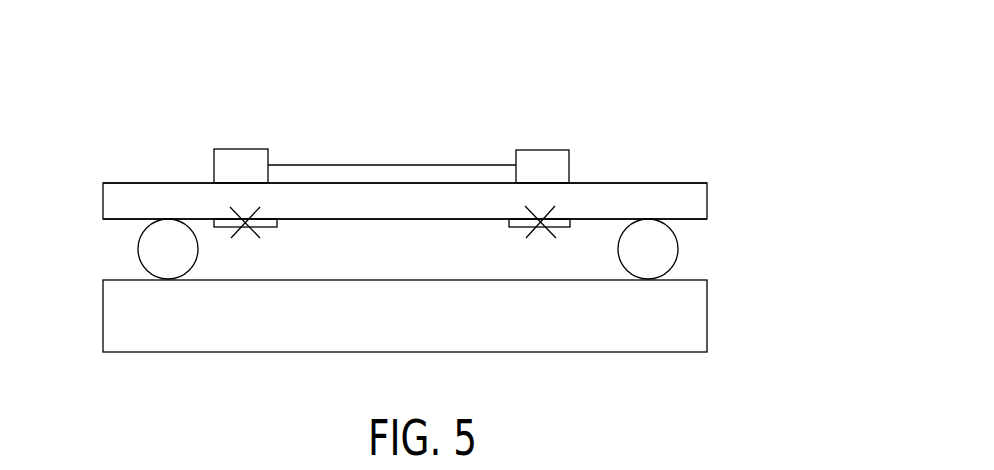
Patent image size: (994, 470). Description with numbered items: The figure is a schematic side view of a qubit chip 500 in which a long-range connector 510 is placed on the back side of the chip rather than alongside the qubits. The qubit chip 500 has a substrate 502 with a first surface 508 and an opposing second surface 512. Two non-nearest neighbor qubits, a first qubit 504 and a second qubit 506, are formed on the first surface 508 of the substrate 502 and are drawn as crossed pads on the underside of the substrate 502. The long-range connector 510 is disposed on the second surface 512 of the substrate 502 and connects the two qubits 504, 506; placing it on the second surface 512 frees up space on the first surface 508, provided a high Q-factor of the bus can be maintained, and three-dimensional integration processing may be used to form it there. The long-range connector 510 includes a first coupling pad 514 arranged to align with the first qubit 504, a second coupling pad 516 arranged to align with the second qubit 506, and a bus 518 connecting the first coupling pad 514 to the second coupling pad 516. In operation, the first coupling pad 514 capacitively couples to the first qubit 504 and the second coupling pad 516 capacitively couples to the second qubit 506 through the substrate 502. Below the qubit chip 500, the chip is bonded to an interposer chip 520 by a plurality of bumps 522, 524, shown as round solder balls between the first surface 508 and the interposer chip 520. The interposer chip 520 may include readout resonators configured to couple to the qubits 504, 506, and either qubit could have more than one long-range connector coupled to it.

The qubit chip 500 is at (699, 152).
The substrate 502 is at (707, 198).
The first qubit 504 is at (246, 226).
The second qubit 506 is at (540, 226).
The first surface 508 is at (690, 219).
The long-range connector 510 is at (445, 122).
The second surface 512 is at (617, 183).
The first coupling pad 514 is at (213, 163).
The second coupling pad 516 is at (540, 149).
The bus 518 is at (335, 165).
The interposer chip 520 is at (707, 312).
The bump 522 is at (140, 239).
The bump 524 is at (677, 258).